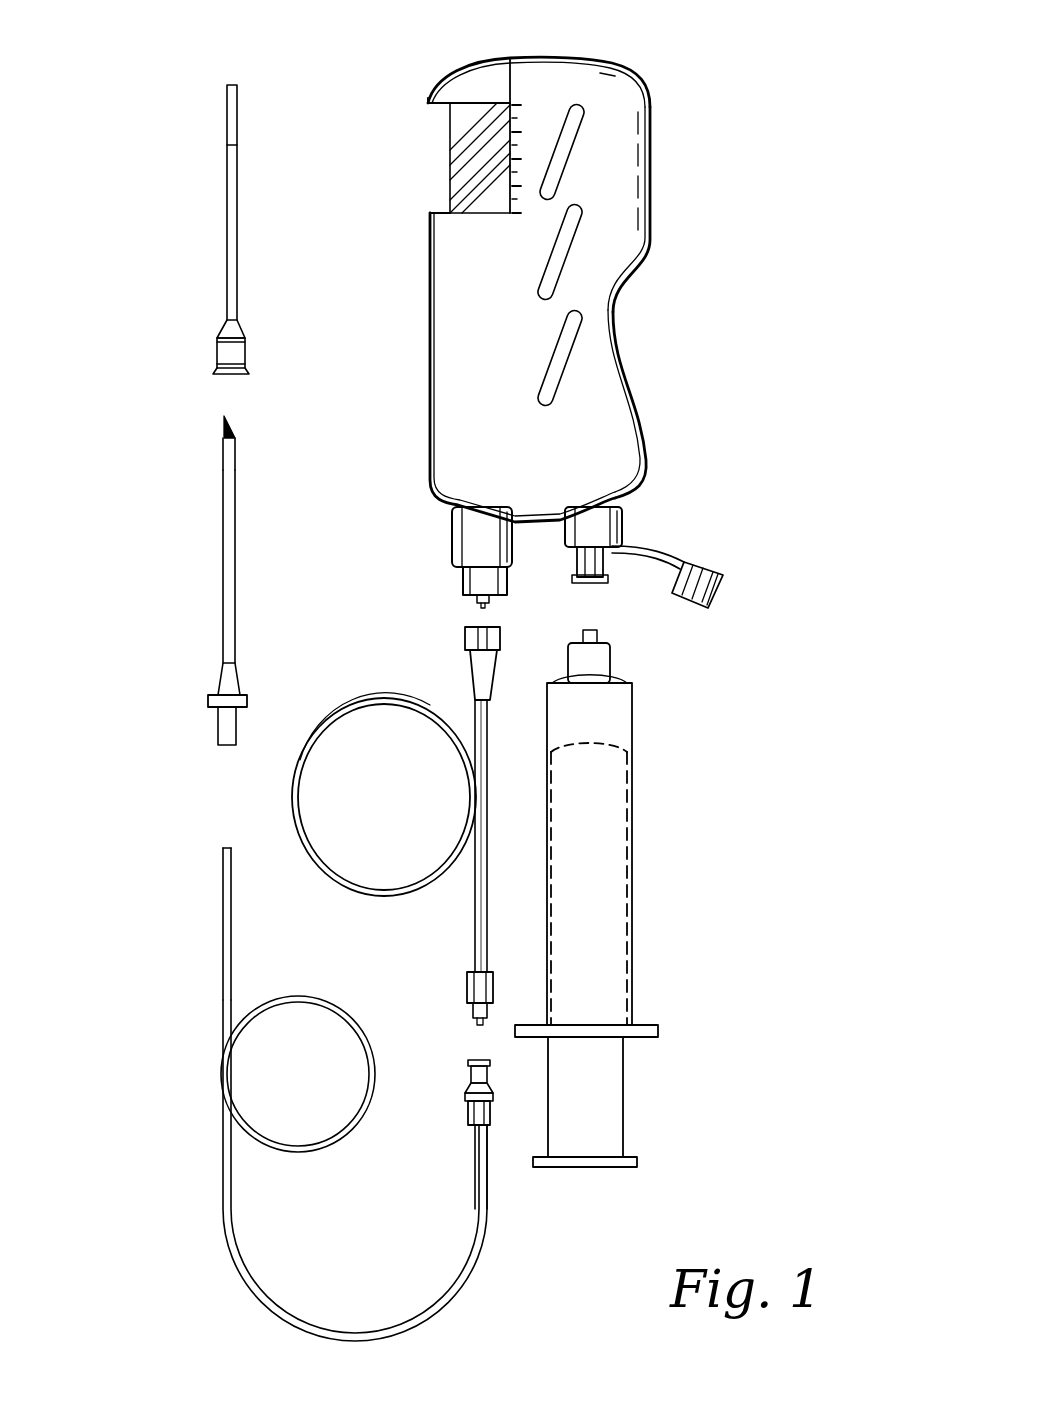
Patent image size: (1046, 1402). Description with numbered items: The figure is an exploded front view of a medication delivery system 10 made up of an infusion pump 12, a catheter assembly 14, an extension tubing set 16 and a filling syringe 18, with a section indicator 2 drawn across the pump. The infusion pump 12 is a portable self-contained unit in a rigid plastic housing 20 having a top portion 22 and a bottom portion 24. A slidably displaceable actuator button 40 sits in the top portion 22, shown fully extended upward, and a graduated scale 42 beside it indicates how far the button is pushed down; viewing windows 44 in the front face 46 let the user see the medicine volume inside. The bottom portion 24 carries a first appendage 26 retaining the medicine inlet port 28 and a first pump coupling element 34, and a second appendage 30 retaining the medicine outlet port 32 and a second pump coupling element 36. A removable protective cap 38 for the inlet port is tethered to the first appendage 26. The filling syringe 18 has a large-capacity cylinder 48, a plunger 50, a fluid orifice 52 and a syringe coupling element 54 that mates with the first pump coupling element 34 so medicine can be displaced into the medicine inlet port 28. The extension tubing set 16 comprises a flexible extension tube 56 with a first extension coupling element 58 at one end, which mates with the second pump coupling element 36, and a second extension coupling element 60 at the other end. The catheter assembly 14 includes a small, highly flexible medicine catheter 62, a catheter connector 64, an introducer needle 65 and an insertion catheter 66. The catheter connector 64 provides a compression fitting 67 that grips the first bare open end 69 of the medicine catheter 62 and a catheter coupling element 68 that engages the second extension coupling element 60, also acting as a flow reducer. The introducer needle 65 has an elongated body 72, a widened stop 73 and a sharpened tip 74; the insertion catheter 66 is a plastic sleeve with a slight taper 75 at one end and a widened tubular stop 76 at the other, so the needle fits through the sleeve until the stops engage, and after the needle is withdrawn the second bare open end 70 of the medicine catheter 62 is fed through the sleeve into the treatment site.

The section line 2- 2 is at (688, 293).
The medication delivery system 10 is at (762, 252).
The infusion pump 12 is at (573, 324).
The catheter assembly 14 is at (341, 1094).
The extension tubing set 16 is at (348, 708).
The filling syringe 18 is at (634, 742).
The housing 20 is at (630, 110).
The top portion 22 is at (605, 73).
The bottom portion 24 is at (642, 486).
The first appendage 26 is at (610, 522).
The medicine inlet port 28 is at (585, 584).
The second appendage 30 is at (456, 527).
The medicine outlet port 32 is at (478, 600).
The first pump coupling element 34 is at (673, 598).
The second pump coupling element 36 is at (462, 575).
The protective cap 38 is at (709, 588).
The actuator button 40 is at (476, 66).
The graduated scale 42 is at (523, 95).
The viewing windows 44 is at (568, 152).
The front face 46 is at (455, 246).
The cylinder 48 is at (634, 710).
The plunger 50 is at (622, 1092).
The fluid orifice 52 is at (596, 634).
The syringe coupling element 54 is at (612, 663).
The extension tube 56 is at (478, 720).
The first extension coupling element 58 is at (474, 640).
The second extension coupling element 60 is at (468, 1000).
The medicine catheter 62 is at (460, 1285).
The catheter connector 64 is at (431, 1090).
The introducer needle 65 is at (237, 610).
The insertion catheter 66 is at (270, 209).
The compression fitting 67 is at (472, 1093).
The catheter coupling element 68 is at (470, 1063).
The first bare open end 69 is at (488, 1170).
The second bare open end 70 is at (222, 882).
The elongated body 72 is at (224, 568).
The widened stop 73 is at (212, 702).
The sharpened tip 74 is at (228, 422).
The slight taper 75 is at (231, 86).
The widened tubular stop 76 is at (238, 360).